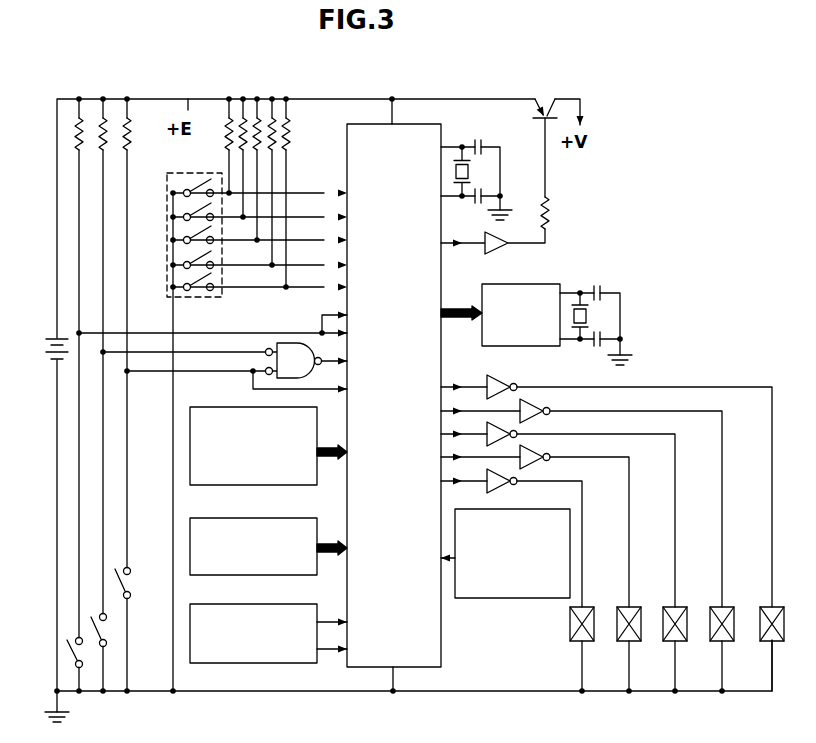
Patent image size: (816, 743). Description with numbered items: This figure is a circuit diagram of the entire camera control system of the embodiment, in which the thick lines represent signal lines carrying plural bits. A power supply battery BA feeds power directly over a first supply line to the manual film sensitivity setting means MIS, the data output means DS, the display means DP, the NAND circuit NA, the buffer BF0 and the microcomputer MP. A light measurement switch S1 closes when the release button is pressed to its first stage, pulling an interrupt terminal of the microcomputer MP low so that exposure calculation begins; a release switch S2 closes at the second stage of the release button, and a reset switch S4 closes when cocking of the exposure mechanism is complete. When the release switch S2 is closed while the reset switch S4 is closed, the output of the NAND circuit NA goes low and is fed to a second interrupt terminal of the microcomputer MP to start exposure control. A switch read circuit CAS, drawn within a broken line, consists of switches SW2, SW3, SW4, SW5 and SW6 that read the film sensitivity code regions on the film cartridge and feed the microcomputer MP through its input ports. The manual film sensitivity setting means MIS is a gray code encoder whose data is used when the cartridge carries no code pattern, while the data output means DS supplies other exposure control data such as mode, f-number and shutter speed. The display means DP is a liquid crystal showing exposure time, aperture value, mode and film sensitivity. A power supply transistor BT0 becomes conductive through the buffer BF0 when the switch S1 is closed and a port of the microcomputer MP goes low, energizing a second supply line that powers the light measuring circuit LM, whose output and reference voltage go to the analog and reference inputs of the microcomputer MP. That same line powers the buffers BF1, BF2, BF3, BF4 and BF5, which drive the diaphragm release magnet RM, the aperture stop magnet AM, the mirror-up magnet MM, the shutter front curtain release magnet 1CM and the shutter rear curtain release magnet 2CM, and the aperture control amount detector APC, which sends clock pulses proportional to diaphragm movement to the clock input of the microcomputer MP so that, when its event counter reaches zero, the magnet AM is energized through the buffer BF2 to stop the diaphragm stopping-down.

The power supply battery BA is at (48, 343).
The light measurement switch S1 is at (85, 656).
The release switch S2 is at (109, 631).
The reset switch S4 is at (129, 582).
The switch SW2 is at (205, 181).
The switch SW3 is at (175, 214).
The switch SW4 is at (175, 238).
The switch SW5 is at (180, 263).
The switch SW6 is at (178, 287).
The switch read circuit CAS is at (238, 418).
The NAND circuit NA is at (279, 345).
The manual film sensitivity setting means MIS is at (237, 407).
The data output means DS is at (272, 518).
The light measuring circuit LM is at (208, 663).
The microcomputer MP is at (430, 651).
The buffer BF0 is at (488, 249).
The power supply transistor BT0 is at (543, 100).
The display means DP is at (556, 285).
The buffer BF1 is at (491, 390).
The buffer BF2 is at (536, 404).
The buffer BF3 is at (505, 432).
The buffer BF4 is at (530, 462).
The buffer BF5 is at (499, 490).
The aperture control amount detector APC is at (537, 590).
The shutter rear curtain release magnet 2CM is at (572, 627).
The shutter front curtain release magnet 1CM is at (619, 627).
The mirror-up magnet MM is at (665, 627).
The aperture stop magnet AM is at (712, 627).
The diaphragm release magnet RM is at (762, 627).